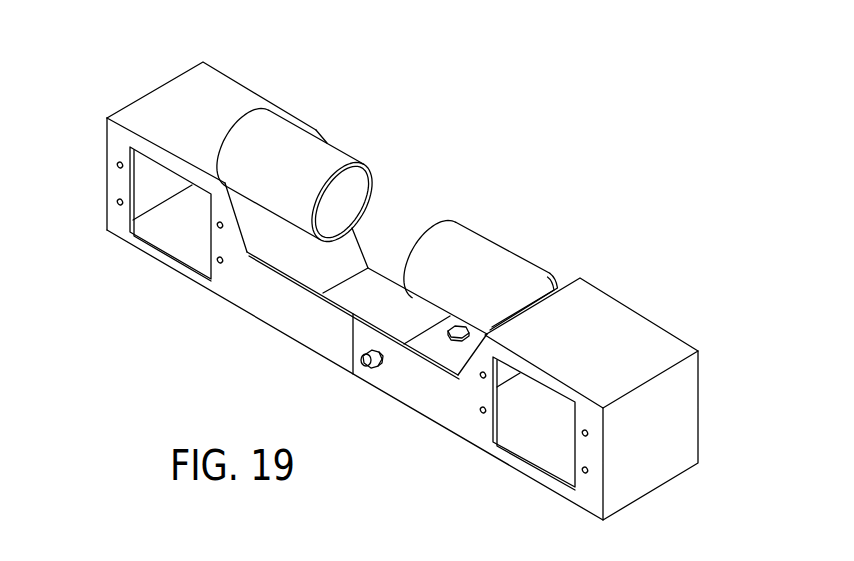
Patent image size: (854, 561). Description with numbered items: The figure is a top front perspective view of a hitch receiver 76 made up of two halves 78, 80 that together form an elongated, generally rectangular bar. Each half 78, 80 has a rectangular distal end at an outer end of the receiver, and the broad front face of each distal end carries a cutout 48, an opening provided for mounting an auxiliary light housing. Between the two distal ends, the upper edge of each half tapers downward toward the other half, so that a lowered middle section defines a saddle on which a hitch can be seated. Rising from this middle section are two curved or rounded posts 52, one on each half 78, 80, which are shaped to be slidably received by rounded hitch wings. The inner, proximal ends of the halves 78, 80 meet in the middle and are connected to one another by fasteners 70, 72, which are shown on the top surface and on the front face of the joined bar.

The hitch receiver 76 is at (595, 214).
The half of the hitch receiver 78 is at (153, 105).
The half of the hitch receiver 80 is at (625, 320).
The cutout 48 is at (162, 255).
The rounded post 52 is at (272, 125).
The fastener 70 is at (444, 333).
The fastener 72 is at (380, 368).